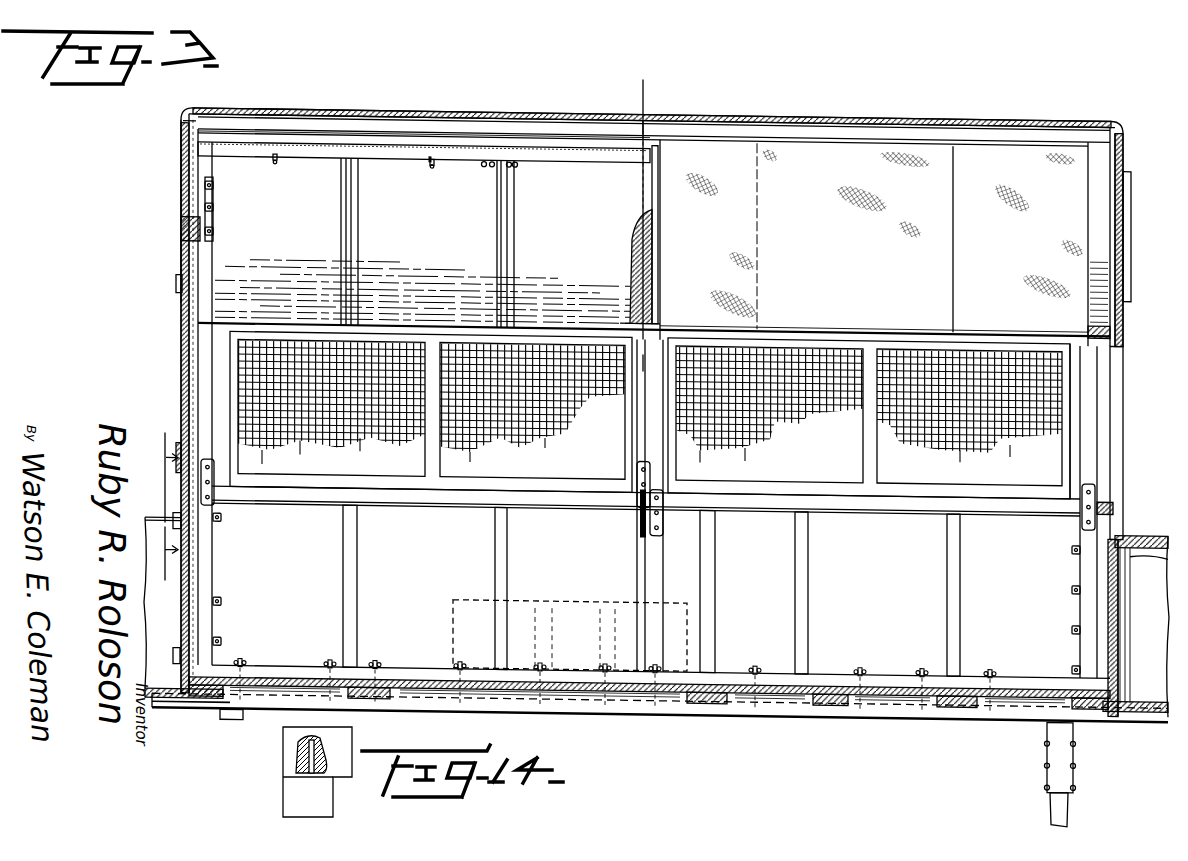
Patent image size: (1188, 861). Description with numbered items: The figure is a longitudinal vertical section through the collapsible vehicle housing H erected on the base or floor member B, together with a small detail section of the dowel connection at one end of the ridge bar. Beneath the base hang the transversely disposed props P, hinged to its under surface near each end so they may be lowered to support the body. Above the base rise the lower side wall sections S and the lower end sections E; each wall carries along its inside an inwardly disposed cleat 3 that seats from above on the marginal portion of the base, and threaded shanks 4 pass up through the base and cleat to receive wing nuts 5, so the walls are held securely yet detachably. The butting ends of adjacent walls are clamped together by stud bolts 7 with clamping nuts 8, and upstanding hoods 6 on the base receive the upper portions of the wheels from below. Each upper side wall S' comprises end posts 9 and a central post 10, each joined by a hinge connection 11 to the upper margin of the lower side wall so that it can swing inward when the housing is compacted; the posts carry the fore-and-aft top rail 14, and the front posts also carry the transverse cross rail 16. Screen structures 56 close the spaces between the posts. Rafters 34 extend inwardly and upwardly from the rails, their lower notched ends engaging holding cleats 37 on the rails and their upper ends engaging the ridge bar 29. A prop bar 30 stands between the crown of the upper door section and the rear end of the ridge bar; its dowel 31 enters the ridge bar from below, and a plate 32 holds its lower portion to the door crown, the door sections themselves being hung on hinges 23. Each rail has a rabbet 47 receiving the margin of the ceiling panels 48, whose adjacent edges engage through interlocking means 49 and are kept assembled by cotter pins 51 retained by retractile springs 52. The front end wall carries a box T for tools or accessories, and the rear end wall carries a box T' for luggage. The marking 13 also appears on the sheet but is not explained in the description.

In FIG. 3, the housing H is at (936, 135).
In FIG. 3, the lower end section E is at (189, 575).
In FIG. 3, the lower side wall section S is at (661, 590).
In FIG. 3, the upper side wall S' is at (1116, 422).
In FIG. 3, the box T is at (1136, 626).
In FIG. 3, the box T' is at (187, 609).
In FIG. 3, the base or floor member B is at (848, 700).
In FIG. 3, the prop P is at (1050, 767).
In FIG. 3, the cleat 3 is at (284, 672).
In FIG. 3, the threaded shank 4 is at (376, 656).
In FIG. 3, the wing nut 5 is at (774, 670).
In FIG. 3, the hood 6 is at (634, 100).
In FIG. 3, the stud bolt 7 is at (222, 640).
In FIG. 3, the clamping nut 8 is at (220, 520).
In FIG. 3, the end post 9 is at (208, 366).
In FIG. 3, the central post 10 is at (662, 368).
In FIG. 3, the hinge connection 11 is at (214, 470).
In FIG. 3, the distance 13 is at (164, 505).
In FIG. 3, the top rail 14 is at (824, 320).
In FIG. 3, the cross rail 16 is at (1118, 330).
In FIG. 3, the hinge 23 is at (176, 282).
In FIG. 3, the ridge bar 29 is at (486, 112).
In FIG. 14, the ridge bar 29 is at (288, 746).
In FIG. 3, the prop bar 30 is at (192, 192).
In FIG. 14, the prop bar 30 is at (330, 796).
In FIG. 3, the dowel 31 is at (180, 126).
In FIG. 14, the dowel 31 is at (316, 744).
In FIG. 3, the plate 32 is at (200, 210).
In FIG. 3, the rafter 34 is at (656, 226).
In FIG. 3, the holding cleat 37 is at (636, 310).
In FIG. 3, the rabbet 47 is at (868, 330).
In FIG. 3, the ceiling panel 48 is at (543, 212).
In FIG. 3, the interlocking means 49 is at (358, 230).
In FIG. 3, the cotter pin 51 is at (432, 150).
In FIG. 3, the retractile spring 52 is at (278, 162).
In FIG. 3, the screen structure 56 is at (650, 415).